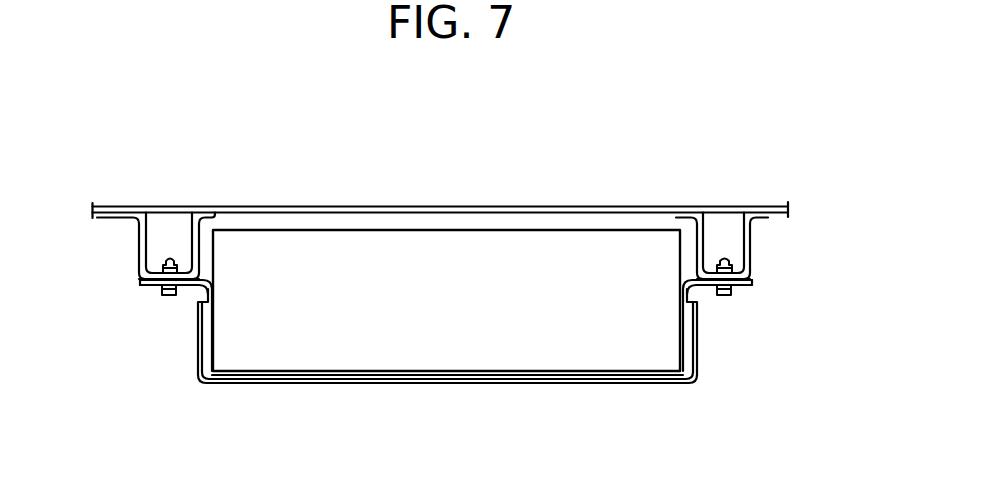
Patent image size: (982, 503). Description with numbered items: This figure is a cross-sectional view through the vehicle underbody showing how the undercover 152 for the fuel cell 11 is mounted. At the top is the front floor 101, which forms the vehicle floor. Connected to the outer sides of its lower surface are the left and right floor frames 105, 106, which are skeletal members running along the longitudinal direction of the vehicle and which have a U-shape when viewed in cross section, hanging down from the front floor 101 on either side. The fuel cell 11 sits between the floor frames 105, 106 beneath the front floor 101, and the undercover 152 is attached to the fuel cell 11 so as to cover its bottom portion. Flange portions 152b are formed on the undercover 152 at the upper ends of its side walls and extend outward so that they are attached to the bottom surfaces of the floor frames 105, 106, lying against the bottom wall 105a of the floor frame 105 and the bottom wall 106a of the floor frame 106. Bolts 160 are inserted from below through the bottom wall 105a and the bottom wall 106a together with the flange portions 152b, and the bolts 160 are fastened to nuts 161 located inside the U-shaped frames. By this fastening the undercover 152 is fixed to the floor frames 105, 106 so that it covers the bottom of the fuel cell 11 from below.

The fuel cell 11 is at (347, 230).
The front floor 101 is at (512, 206).
The floor frame 105 is at (141, 251).
The bottom wall 105a is at (148, 297).
The floor frame 106 is at (753, 236).
The bottom wall 106a is at (752, 285).
The undercover 152 is at (489, 383).
The flange portion 152b is at (181, 296).
The bolt 160 is at (158, 294).
The nut 161 is at (179, 257).